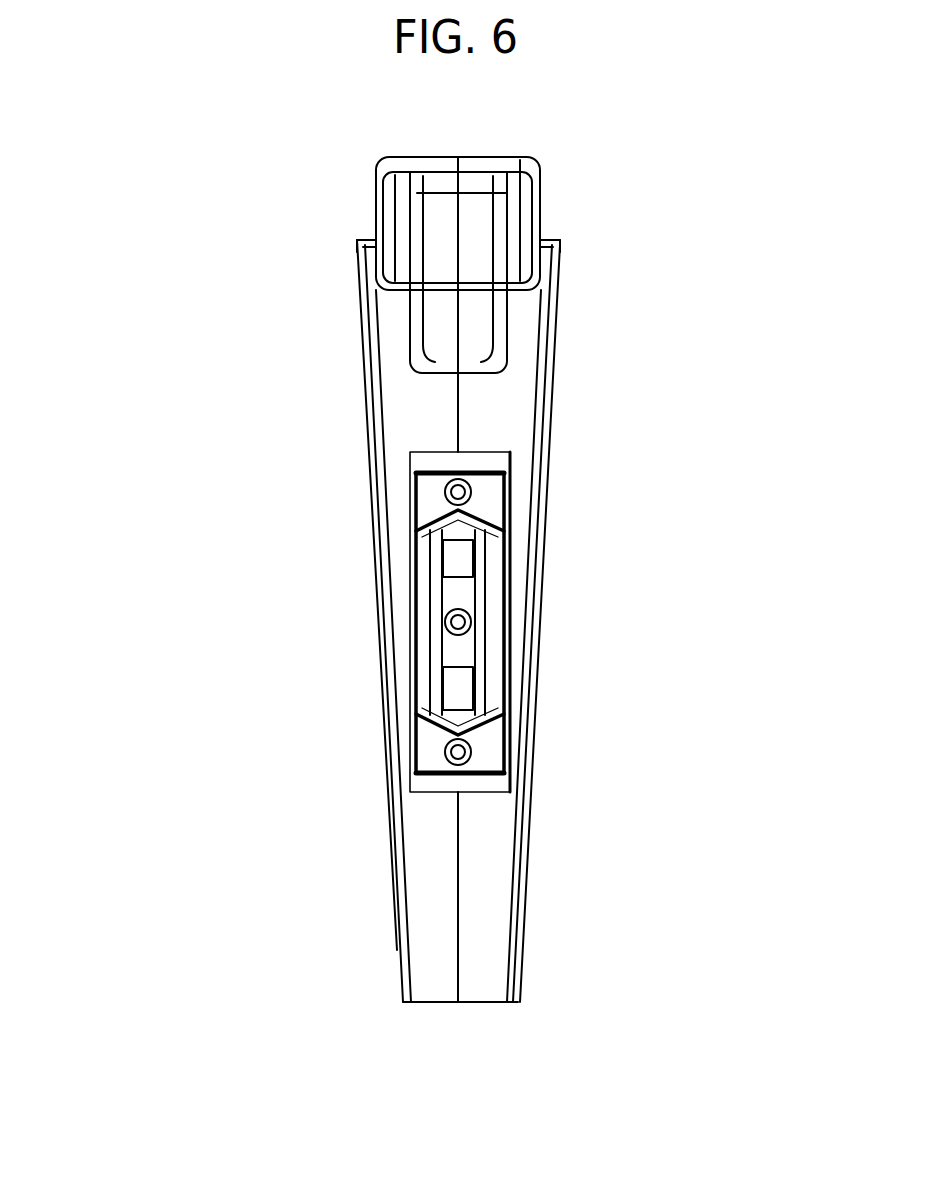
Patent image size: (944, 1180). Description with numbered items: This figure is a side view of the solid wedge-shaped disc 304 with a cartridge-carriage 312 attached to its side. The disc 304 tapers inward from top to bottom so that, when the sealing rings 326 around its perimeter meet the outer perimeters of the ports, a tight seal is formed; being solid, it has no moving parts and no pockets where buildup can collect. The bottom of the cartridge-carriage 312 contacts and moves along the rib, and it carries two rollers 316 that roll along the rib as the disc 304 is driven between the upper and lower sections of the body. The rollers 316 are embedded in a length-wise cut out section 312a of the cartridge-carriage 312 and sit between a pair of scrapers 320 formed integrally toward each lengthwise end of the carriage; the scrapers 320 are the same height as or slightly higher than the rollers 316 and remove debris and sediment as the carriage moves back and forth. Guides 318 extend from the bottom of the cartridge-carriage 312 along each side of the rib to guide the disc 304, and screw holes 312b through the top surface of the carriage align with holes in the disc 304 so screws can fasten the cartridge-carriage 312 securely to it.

The disc 304 is at (403, 420).
The cartridge-carriage 312 is at (513, 473).
The length-wise cut out section 312a is at (457, 595).
The screw holes 312b is at (452, 627).
The rollers 316 is at (457, 553).
The guides 318 is at (460, 680).
The scrapers 320 is at (410, 525).
The sealing rings 326 is at (517, 873).